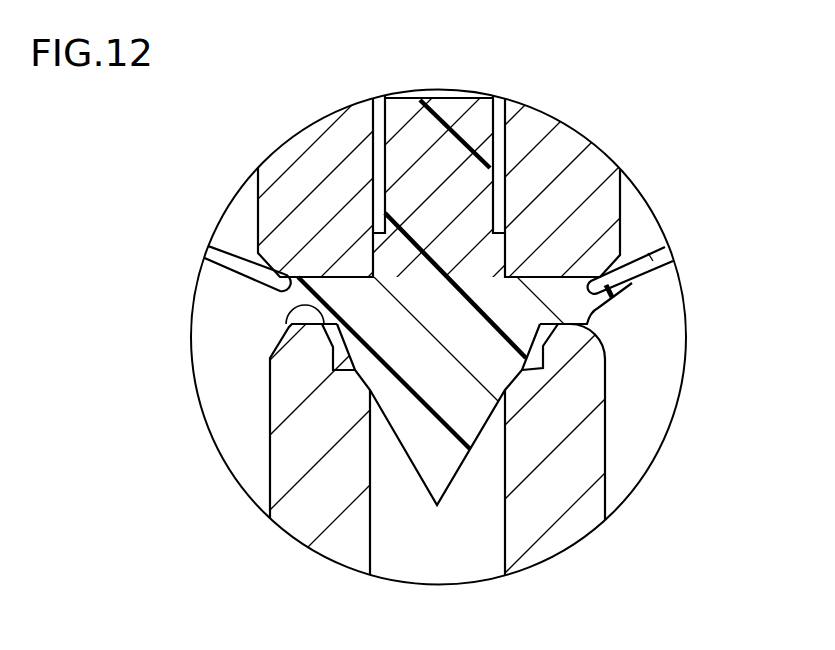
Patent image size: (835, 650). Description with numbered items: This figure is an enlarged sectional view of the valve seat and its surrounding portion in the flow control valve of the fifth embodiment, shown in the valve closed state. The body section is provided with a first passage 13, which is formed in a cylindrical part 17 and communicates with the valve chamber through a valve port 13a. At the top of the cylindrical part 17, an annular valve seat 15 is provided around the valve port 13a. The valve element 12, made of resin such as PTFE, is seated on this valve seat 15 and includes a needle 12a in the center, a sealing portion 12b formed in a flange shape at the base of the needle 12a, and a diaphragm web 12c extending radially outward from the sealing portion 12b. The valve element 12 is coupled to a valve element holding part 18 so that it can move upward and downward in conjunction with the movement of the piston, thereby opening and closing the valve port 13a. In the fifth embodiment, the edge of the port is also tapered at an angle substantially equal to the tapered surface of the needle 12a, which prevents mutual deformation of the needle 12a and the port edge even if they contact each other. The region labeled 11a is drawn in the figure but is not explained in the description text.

The lip portion 11a is at (313, 292).
The valve element 12 is at (468, 293).
The needle 12a is at (458, 442).
The sealing portion 12b is at (563, 328).
The diaphragm web 12c is at (640, 277).
The first passage 13 is at (482, 527).
The valve port 13a is at (370, 503).
The valve seat 15 is at (338, 366).
The cylindrical part 17 is at (305, 503).
The valve element holding part 18 is at (293, 210).